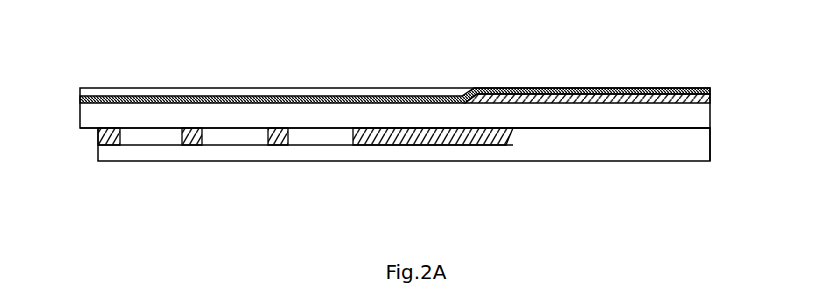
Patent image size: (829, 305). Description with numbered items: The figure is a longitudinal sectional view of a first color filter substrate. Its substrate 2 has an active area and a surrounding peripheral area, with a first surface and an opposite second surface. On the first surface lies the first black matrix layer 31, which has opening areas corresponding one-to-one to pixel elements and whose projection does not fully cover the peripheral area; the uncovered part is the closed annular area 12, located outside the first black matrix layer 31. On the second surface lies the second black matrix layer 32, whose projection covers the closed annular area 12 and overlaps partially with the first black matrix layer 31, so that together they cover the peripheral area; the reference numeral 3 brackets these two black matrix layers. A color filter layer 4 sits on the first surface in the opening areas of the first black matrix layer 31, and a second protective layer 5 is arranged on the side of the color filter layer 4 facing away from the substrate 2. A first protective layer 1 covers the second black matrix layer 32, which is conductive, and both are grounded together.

The first protective layer 1 is at (103, 112).
The substrate 2 is at (109, 127).
The light shielding assembly 3 is at (395, 84).
The first black matrix layer 31 is at (488, 128).
The second black matrix layer 32 is at (473, 92).
The color filter layer 4 is at (122, 136).
The second protective layer 5 is at (105, 153).
The closed annular area 12 is at (578, 131).